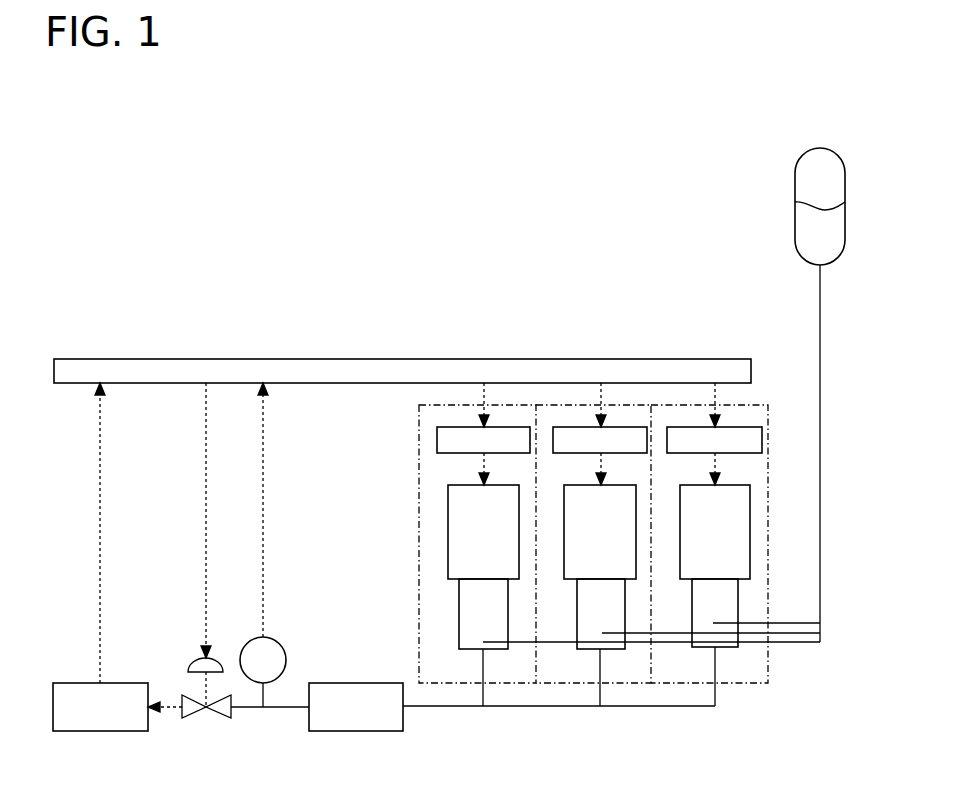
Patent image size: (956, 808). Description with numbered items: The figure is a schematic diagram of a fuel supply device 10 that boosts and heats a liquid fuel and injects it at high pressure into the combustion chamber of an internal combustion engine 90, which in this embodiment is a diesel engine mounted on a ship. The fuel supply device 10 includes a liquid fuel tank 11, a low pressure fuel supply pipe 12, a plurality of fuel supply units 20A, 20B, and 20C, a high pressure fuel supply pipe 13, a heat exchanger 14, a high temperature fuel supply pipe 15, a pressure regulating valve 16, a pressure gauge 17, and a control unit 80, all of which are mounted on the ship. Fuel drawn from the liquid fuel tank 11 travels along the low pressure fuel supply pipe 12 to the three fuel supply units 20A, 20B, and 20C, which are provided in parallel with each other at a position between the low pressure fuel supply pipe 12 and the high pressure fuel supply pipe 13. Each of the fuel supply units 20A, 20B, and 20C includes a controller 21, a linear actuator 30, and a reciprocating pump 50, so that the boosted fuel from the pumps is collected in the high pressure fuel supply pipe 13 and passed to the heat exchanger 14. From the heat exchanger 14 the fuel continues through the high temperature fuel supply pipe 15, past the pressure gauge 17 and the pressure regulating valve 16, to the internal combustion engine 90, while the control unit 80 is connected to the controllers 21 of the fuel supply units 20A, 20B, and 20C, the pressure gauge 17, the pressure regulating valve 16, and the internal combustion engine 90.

The fuel supply device 10 is at (198, 264).
The liquid fuel tank 11 is at (797, 177).
The low pressure fuel supply pipe 12 is at (815, 273).
The high pressure fuel supply pipe 13 is at (500, 707).
The heat exchanger 14 is at (375, 731).
The high temperature fuel supply pipe 15 is at (278, 708).
The pressure regulating valve 16 is at (202, 652).
The pressure gauge 17 is at (252, 642).
The fuel supply unit 20A is at (425, 710).
The fuel supply unit 20B is at (558, 690).
The fuel supply unit 20C is at (672, 690).
The controller 21 is at (437, 445).
The linear actuator 30 is at (448, 550).
The reciprocating pump 50 is at (459, 605).
The control unit 80 is at (432, 358).
The internal combustion engine 90 is at (115, 731).